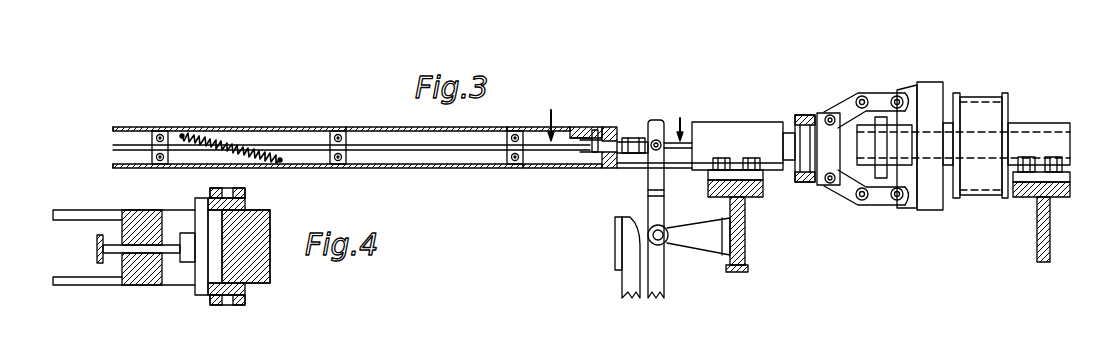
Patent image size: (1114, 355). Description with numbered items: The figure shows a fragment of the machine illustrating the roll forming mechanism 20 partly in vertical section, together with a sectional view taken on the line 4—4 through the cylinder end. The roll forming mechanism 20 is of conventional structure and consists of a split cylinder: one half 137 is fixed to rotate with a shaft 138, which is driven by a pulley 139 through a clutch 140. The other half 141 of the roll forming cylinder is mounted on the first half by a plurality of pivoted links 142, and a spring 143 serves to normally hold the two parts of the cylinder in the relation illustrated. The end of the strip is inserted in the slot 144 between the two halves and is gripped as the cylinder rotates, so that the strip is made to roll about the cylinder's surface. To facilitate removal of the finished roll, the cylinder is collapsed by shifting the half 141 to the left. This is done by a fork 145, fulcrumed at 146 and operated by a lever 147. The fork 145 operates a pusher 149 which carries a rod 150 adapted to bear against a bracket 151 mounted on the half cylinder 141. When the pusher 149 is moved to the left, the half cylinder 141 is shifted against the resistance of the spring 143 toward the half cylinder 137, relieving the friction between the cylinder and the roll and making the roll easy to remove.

In FIG. 3, the section line 4— 4 is at (558, 110).
In FIG. 3, the roll forming mechanism 20 is at (285, 127).
In FIG. 3, the half cylinder 137 is at (552, 168).
In FIG. 4, the half cylinder 137 is at (73, 212).
In FIG. 3, the shaft 138 is at (668, 120).
In FIG. 4, the shaft 138 is at (266, 266).
In FIG. 3, the pulley 139 is at (980, 110).
In FIG. 3, the clutch 140 is at (877, 100).
In FIG. 3, the half cylinder 141 is at (352, 127).
In FIG. 3, the pivoted links 142 is at (157, 131).
In FIG. 3, the spring 143 is at (214, 136).
In FIG. 3, the slot 144 is at (383, 151).
In FIG. 3, the fork 145 is at (650, 200).
In FIG. 4, the fork 145 is at (245, 299).
In FIG. 3, the fulcrum of fork 146 is at (683, 242).
In FIG. 3, the lever 147 is at (615, 250).
In FIG. 3, the pusher 149 is at (636, 140).
In FIG. 4, the pusher 149 is at (200, 228).
In FIG. 3, the rod 150 is at (607, 155).
In FIG. 4, the rod 150 is at (112, 245).
In FIG. 3, the bracket 151 is at (595, 130).
In FIG. 4, the bracket 151 is at (97, 250).